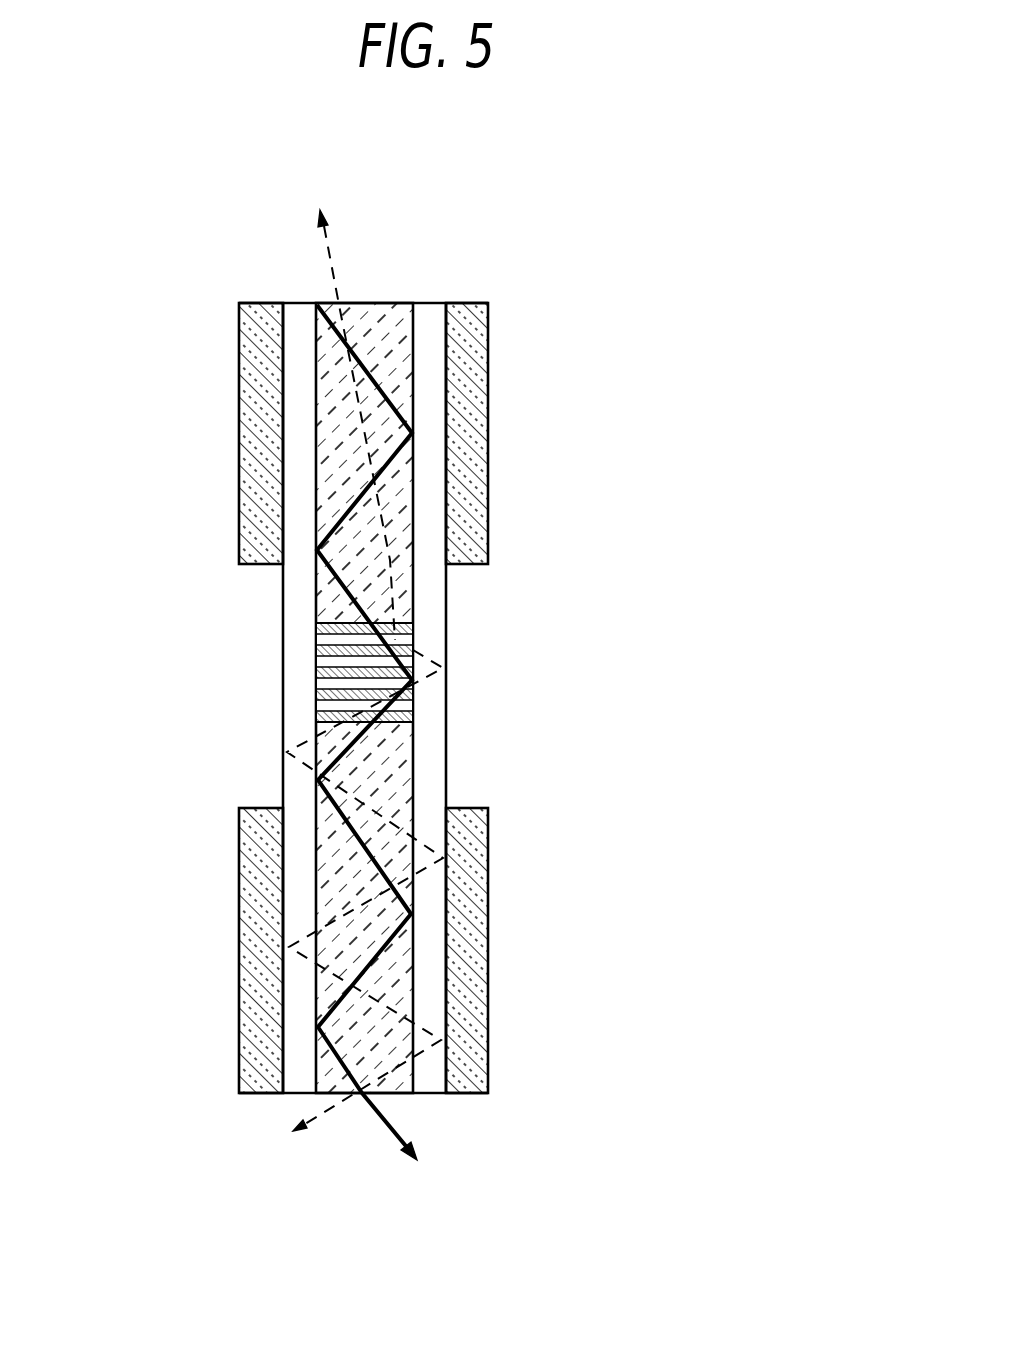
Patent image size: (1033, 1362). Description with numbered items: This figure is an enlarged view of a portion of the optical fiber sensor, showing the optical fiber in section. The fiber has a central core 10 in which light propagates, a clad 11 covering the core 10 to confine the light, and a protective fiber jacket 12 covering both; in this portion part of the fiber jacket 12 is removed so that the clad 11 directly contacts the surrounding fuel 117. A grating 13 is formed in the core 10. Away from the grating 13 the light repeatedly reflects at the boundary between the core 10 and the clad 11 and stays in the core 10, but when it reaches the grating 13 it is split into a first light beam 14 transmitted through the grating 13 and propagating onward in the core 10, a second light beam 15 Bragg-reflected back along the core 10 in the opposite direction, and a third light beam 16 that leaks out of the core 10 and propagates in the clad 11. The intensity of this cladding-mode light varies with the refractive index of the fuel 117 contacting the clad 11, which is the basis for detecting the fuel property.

The core 10 is at (336, 303).
The clad 11 is at (297, 323).
The fiber jacket 12 is at (478, 497).
The grating 13 is at (320, 688).
The first light beam 14 is at (420, 1158).
The second light beam 15 is at (333, 220).
The third light beam 16 is at (300, 1133).
The fuel 117 is at (477, 755).